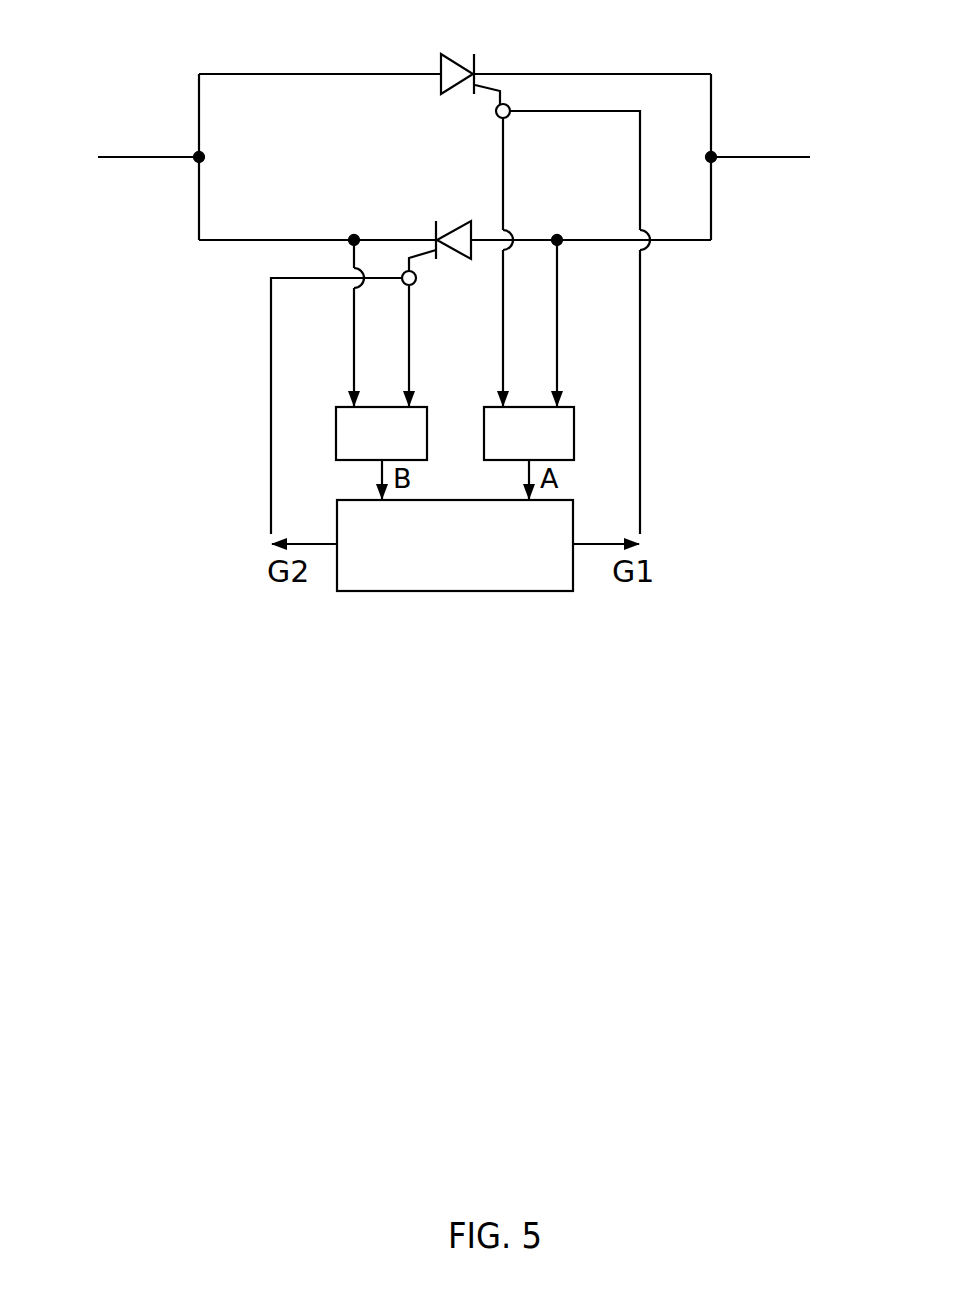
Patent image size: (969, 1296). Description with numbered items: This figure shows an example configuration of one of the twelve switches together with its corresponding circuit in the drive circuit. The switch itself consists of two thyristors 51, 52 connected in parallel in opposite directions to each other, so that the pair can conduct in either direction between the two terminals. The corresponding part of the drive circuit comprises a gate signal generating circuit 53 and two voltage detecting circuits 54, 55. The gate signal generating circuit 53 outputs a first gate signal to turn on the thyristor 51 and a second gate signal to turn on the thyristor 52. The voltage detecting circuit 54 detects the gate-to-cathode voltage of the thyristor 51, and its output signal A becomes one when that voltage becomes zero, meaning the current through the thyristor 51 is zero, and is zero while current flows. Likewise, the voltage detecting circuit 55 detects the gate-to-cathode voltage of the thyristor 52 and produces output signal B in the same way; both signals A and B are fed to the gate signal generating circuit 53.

The thyristor 51 is at (530, 278).
The thyristor 52 is at (414, 361).
The gate signal generating circuit 53 is at (455, 545).
The voltage detecting circuit 54 is at (529, 453).
The voltage detecting circuit 55 is at (381, 453).